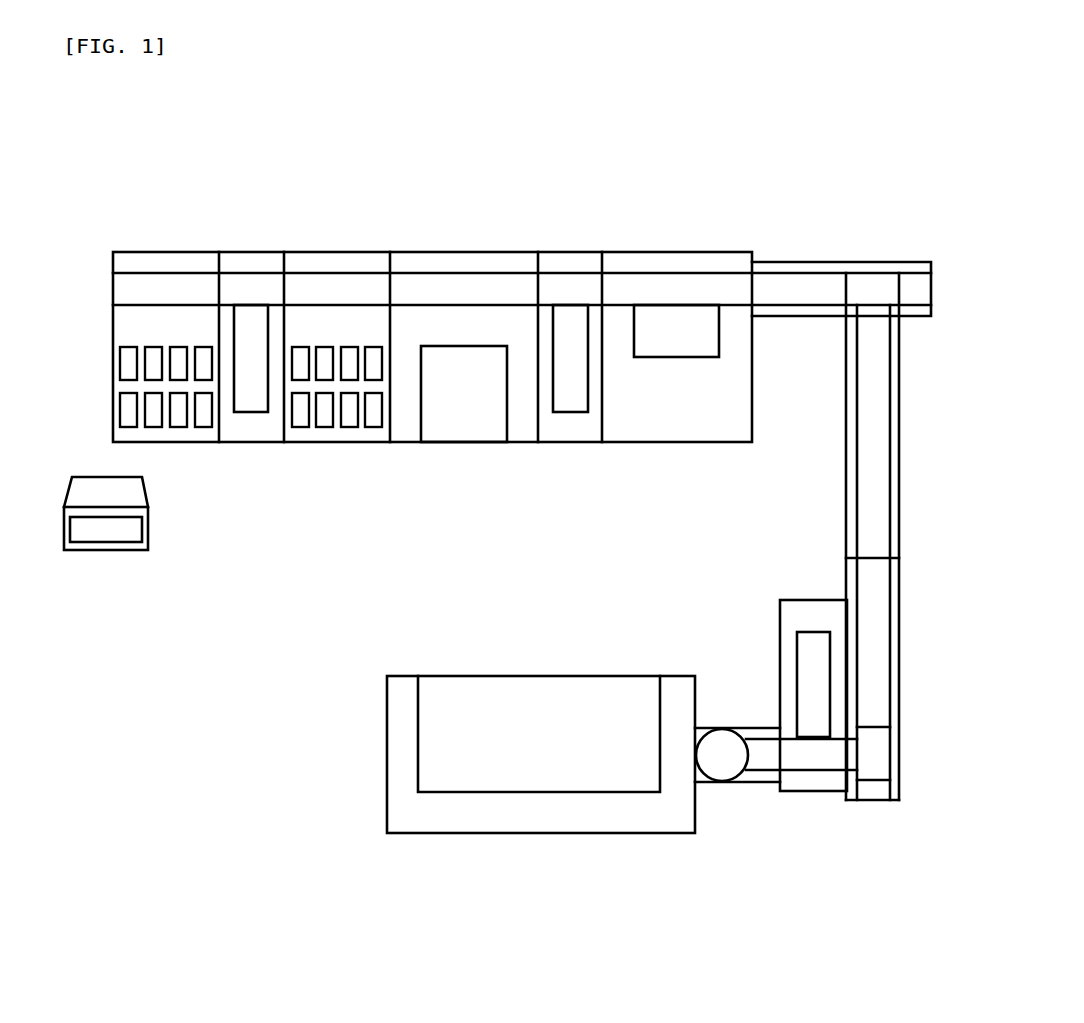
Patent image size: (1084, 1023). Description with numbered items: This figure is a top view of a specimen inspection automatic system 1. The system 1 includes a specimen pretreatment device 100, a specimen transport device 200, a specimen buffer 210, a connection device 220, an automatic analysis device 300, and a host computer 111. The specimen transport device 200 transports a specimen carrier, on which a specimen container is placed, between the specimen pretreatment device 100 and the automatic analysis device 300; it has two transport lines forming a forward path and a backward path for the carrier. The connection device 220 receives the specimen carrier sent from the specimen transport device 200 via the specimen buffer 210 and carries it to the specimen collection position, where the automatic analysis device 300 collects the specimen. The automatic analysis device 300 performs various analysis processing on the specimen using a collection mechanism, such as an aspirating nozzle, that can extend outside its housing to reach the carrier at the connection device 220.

The specimen inspection automatic system 1 is at (697, 187).
The specimen pretreatment device 100 is at (443, 251).
The host computer 111 is at (148, 527).
The specimen transport device 200 is at (878, 262).
The specimen buffer 210 is at (818, 601).
The connection device 220 is at (763, 733).
The automatic analysis device 300 is at (535, 676).